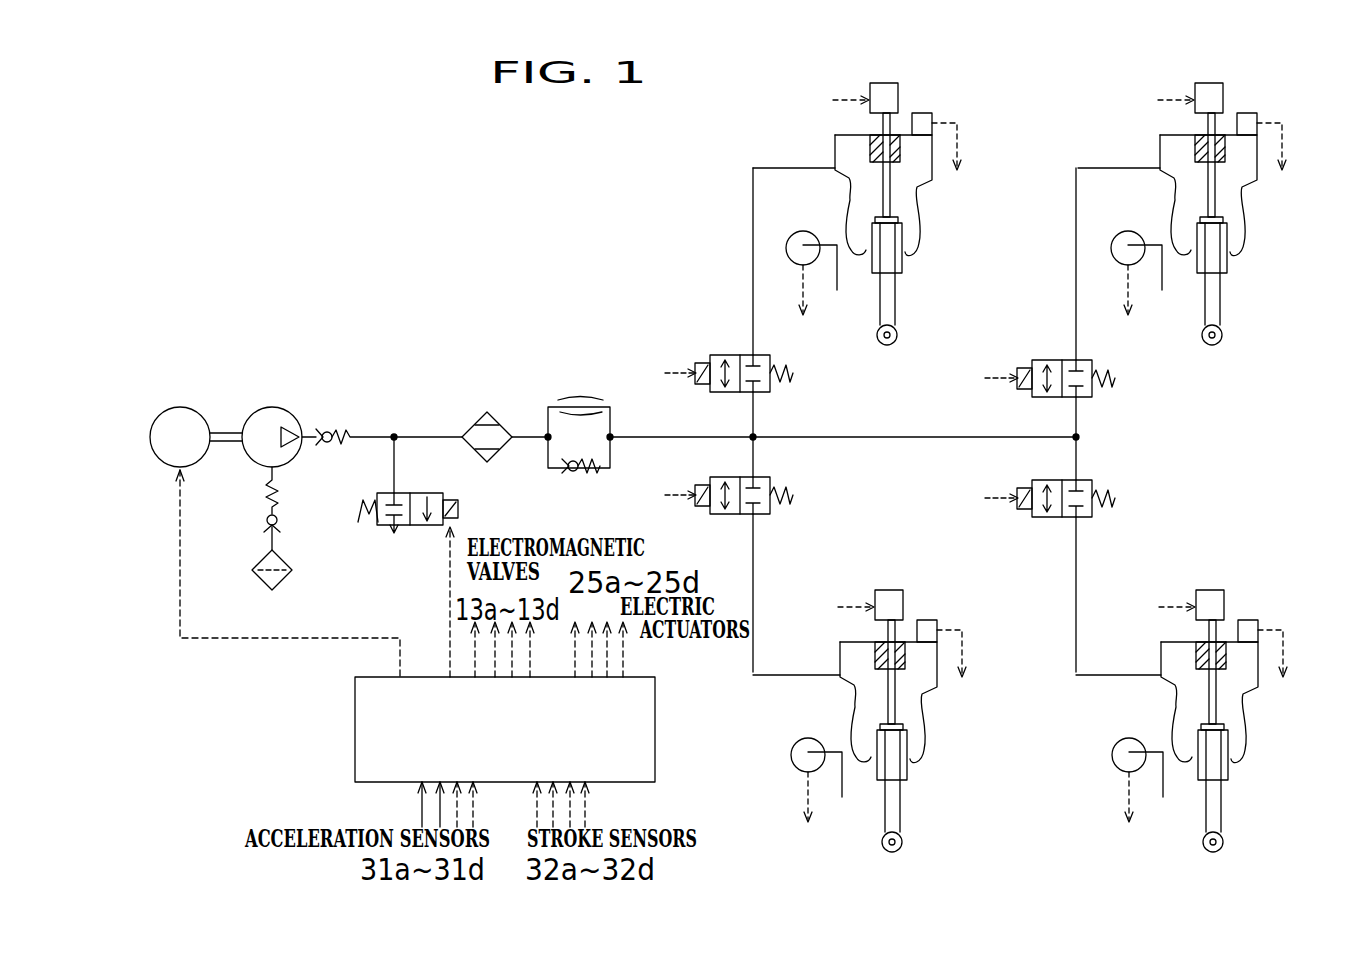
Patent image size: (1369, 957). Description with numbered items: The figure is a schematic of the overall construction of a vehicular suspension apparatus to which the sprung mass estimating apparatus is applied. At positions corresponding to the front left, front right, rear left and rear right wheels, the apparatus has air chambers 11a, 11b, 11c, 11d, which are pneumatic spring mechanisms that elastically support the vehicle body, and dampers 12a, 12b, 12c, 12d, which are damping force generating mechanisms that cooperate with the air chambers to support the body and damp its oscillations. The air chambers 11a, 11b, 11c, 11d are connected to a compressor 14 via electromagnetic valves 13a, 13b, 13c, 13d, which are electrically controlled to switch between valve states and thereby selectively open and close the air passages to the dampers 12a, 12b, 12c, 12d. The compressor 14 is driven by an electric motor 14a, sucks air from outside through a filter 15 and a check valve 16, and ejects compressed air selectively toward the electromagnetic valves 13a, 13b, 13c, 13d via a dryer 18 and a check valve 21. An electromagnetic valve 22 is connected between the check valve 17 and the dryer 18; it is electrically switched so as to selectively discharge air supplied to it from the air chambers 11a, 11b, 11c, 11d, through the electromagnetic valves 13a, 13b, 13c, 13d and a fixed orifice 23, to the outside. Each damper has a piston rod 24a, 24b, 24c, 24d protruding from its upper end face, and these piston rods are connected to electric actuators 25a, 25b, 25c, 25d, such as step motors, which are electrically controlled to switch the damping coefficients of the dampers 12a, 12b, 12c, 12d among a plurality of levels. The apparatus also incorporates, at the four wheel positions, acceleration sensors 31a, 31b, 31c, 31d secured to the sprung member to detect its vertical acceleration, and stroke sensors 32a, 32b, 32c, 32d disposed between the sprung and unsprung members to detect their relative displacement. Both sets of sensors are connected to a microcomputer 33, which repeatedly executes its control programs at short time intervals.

The electric motor 14a is at (180, 407).
The compressor 14 is at (272, 407).
The check valve 17 is at (346, 428).
The check valve 16 is at (282, 500).
The filter 15 is at (292, 568).
The electromagnetic valve 22 is at (410, 492).
The dryer 18 is at (498, 414).
The fixed orifice 23 is at (580, 405).
The check valve 21 is at (585, 473).
The electromagnetic valve 13a is at (745, 355).
The electromagnetic valve 13b is at (1050, 360).
The electromagnetic valve 13c is at (726, 477).
The electromagnetic valve 13d is at (1052, 480).
The electric actuator 25a is at (893, 83).
The electric actuator 25b is at (1225, 81).
The electric actuator 25c is at (904, 588).
The electric actuator 25d is at (1226, 588).
The acceleration sensor 31a is at (935, 113).
The acceleration sensor 31b is at (1289, 127).
The acceleration sensor 31c is at (968, 634).
The acceleration sensor 31d is at (1290, 634).
The piston rod 24a is at (893, 190).
The piston rod 24b is at (1262, 168).
The piston rod 24c is at (941, 675).
The piston rod 24d is at (1263, 675).
The air chamber 11a is at (920, 245).
The air chamber 11b is at (1244, 198).
The air chamber 11c is at (923, 705).
The air chamber 11d is at (1245, 705).
The damper 12a is at (898, 305).
The damper 12b is at (1249, 284).
The damper 12c is at (928, 791).
The damper 12d is at (1250, 791).
The stroke sensor 32a is at (803, 231).
The stroke sensor 32b is at (1127, 247).
The stroke sensor 32c is at (807, 754).
The stroke sensor 32d is at (1128, 754).
The microcomputer 33 is at (655, 727).